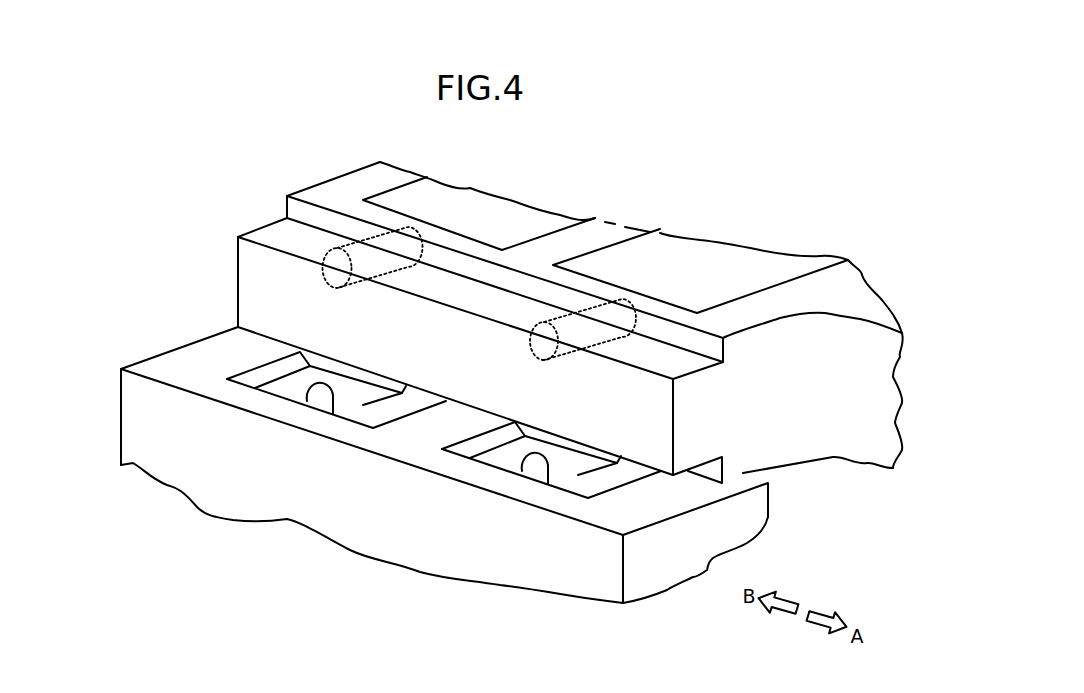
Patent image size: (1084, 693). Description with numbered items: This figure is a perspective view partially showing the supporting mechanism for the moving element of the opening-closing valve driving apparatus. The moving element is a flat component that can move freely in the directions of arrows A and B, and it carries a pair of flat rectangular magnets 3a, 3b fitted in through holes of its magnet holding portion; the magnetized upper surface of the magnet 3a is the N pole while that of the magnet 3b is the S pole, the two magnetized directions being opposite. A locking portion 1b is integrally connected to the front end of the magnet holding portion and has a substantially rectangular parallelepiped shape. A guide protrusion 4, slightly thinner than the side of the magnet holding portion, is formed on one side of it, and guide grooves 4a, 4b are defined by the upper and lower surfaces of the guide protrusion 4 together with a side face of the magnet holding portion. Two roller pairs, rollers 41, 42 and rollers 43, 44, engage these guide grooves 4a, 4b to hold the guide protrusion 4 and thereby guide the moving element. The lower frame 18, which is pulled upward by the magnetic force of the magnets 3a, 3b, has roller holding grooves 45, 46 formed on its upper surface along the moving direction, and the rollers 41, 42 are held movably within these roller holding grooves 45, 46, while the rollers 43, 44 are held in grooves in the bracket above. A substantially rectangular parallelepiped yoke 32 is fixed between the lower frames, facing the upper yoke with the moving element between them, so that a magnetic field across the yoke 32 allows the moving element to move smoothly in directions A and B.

The locking portion 1b is at (798, 413).
The magnet 3a is at (492, 202).
The magnet 3b is at (706, 248).
The guide protrusion 4 is at (250, 287).
The guide groove 4a is at (272, 235).
The guide groove 4b is at (708, 473).
The lower frame 18 is at (192, 360).
The yoke 32 is at (777, 470).
The roller 41 is at (555, 477).
The roller 42 is at (350, 398).
The roller 43 is at (603, 325).
The roller 44 is at (367, 257).
The roller holding groove 45 is at (498, 453).
The roller holding groove 46 is at (277, 385).